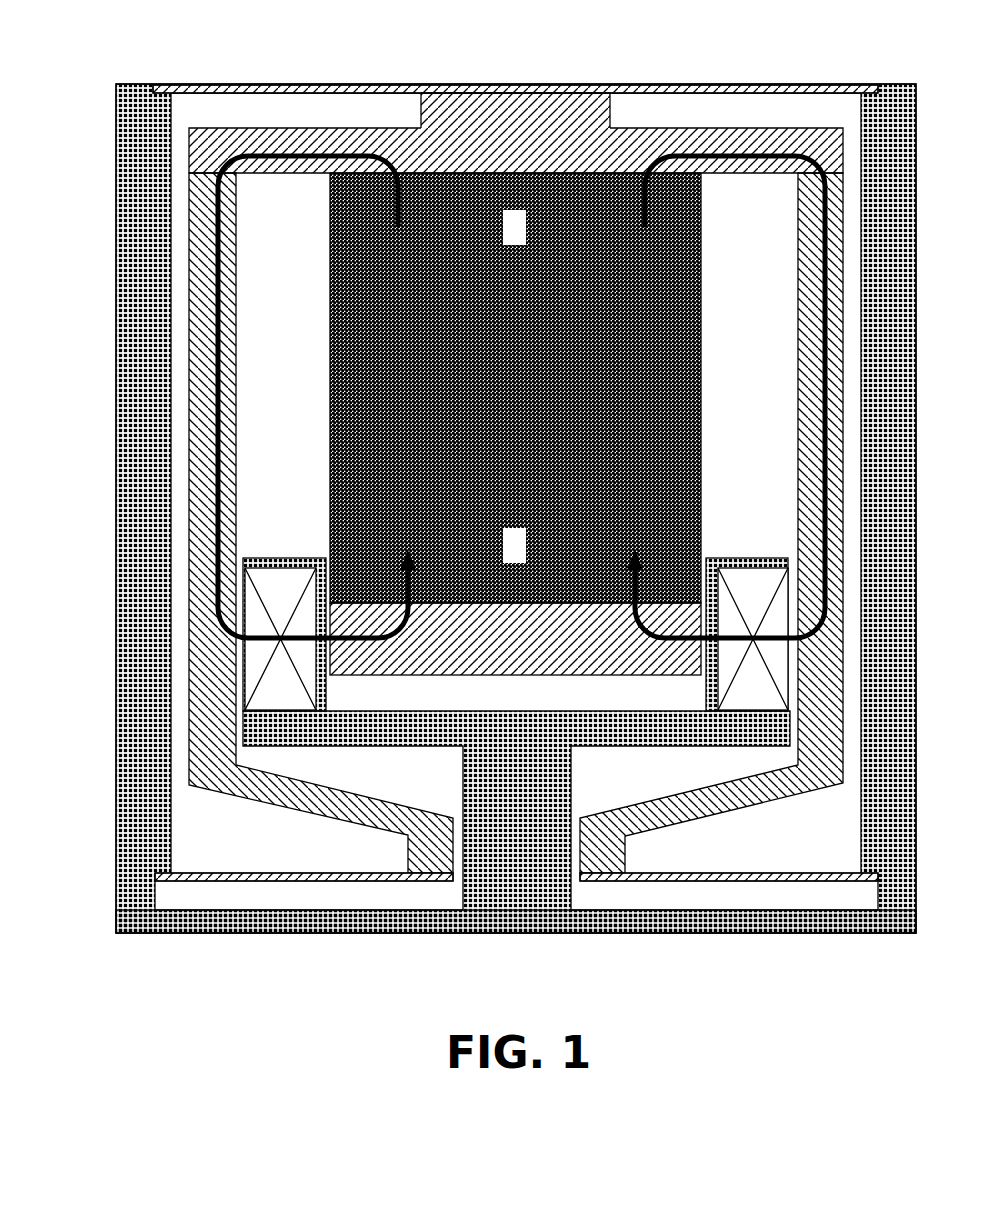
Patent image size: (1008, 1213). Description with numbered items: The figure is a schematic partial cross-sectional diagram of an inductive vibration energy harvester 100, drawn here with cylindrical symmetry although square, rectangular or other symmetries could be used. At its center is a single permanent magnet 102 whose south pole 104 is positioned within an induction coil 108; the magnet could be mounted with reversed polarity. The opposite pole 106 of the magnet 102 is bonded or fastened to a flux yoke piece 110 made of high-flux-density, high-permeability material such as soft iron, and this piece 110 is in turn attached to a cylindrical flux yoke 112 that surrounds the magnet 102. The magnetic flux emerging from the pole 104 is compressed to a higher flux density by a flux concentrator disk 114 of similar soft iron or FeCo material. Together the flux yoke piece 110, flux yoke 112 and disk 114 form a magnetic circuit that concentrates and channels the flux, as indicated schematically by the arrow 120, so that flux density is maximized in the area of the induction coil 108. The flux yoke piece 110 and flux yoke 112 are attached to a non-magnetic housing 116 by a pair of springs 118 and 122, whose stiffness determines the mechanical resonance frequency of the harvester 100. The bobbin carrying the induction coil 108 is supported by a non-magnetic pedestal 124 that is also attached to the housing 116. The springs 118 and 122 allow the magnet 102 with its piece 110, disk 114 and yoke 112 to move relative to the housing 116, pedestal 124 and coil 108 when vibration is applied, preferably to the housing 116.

The inductive energy harvester 100 is at (219, 1008).
The permanent magnet 102 is at (528, 387).
The magnetic pole 104 is at (322, 525).
The opposite pole 106 is at (322, 220).
The induction coil 108 is at (257, 657).
The flux yoke piece 110 is at (490, 92).
The flux yoke 112 is at (181, 436).
The flux concentrator disk 114 is at (529, 645).
The housing 116 is at (145, 148).
The spring 118 is at (290, 77).
The arrow 120 is at (195, 328).
The spring 122 is at (328, 864).
The pedestal 124 is at (618, 925).